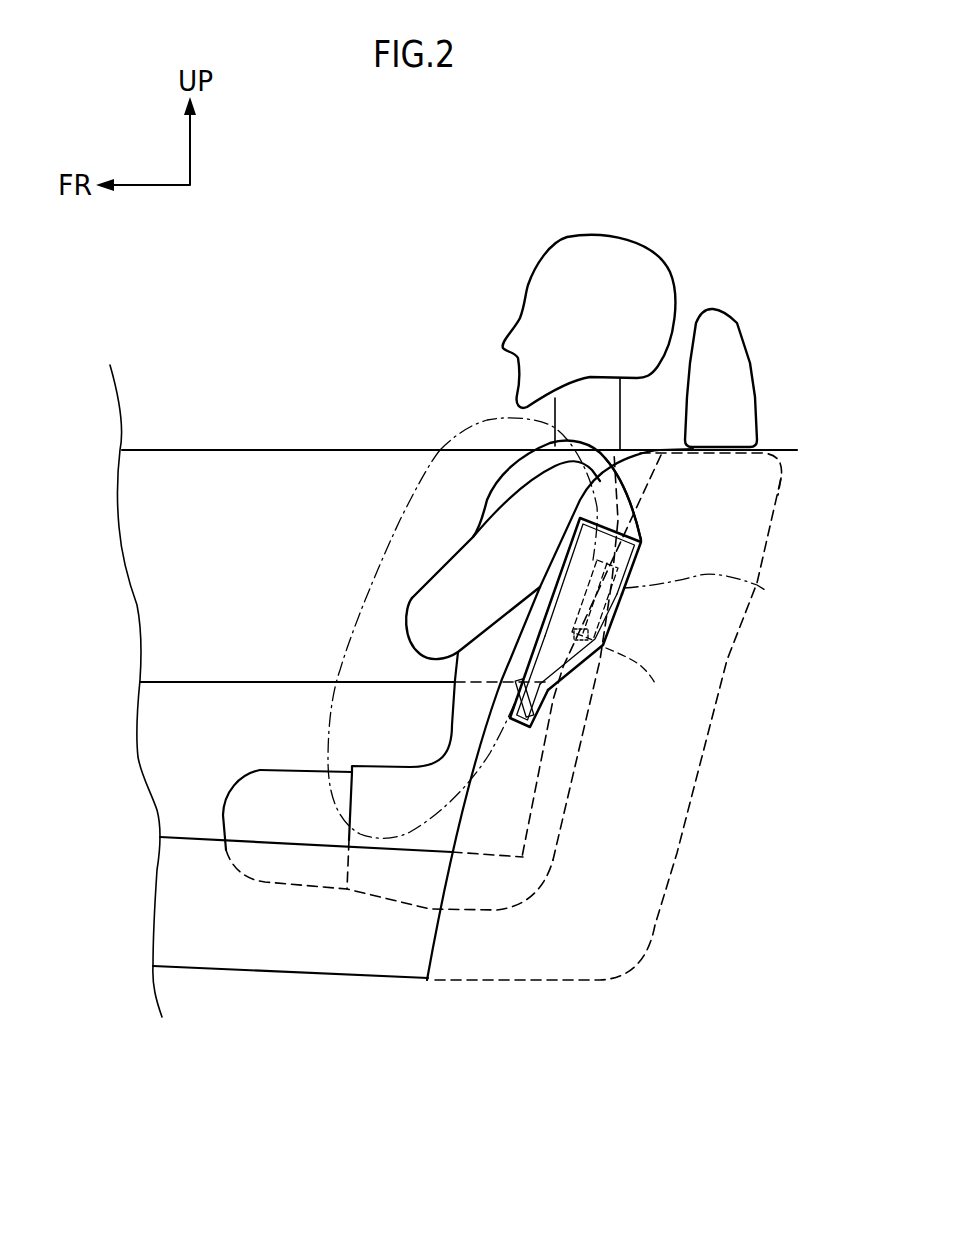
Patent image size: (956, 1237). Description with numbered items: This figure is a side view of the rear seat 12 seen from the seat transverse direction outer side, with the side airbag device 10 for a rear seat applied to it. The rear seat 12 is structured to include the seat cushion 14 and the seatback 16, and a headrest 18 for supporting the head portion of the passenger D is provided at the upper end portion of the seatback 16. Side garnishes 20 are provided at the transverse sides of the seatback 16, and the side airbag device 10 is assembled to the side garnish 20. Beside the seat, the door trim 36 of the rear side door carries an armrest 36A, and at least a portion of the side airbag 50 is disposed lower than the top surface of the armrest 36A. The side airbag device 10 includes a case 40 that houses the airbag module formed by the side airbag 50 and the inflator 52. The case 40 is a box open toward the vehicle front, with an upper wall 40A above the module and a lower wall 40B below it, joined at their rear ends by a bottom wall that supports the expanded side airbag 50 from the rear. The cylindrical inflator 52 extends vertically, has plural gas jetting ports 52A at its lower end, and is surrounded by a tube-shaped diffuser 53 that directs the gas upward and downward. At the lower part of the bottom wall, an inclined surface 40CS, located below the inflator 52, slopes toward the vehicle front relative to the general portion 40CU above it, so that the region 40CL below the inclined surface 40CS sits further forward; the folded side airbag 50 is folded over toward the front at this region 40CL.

The passenger D is at (566, 230).
The side airbag device for a rear seat 10 is at (782, 498).
The rear seat 12 is at (250, 988).
The seat cushion 14 is at (380, 979).
The seatback 16 is at (675, 860).
The headrest 18 is at (740, 345).
The side garnish 20 is at (540, 963).
The door trim 36 is at (230, 445).
The armrest 36A is at (192, 680).
The case 40 is at (646, 565).
The upper wall 40A is at (620, 500).
The lower wall 40B is at (518, 730).
The general portion 40CU is at (616, 607).
The inclined surface 40CS is at (568, 650).
The region 40CL is at (537, 707).
The side airbag 50 is at (657, 536).
The inflator 52 is at (735, 590).
The gas jetting ports 52A is at (653, 675).
The diffuser 53 is at (580, 597).